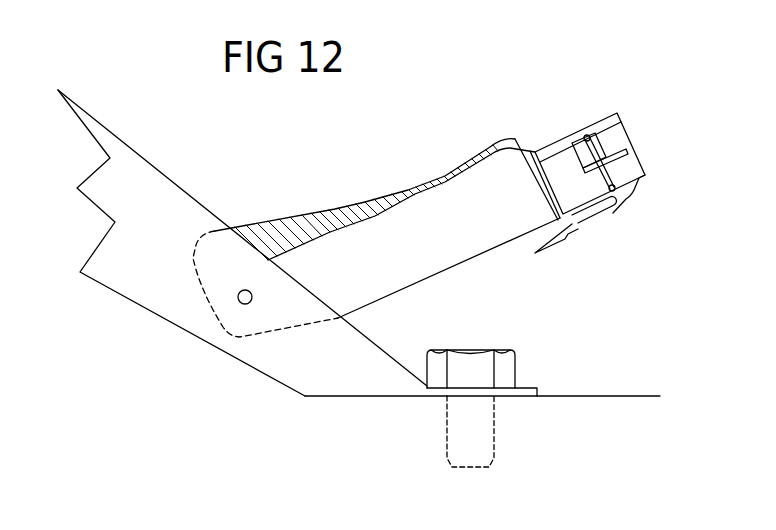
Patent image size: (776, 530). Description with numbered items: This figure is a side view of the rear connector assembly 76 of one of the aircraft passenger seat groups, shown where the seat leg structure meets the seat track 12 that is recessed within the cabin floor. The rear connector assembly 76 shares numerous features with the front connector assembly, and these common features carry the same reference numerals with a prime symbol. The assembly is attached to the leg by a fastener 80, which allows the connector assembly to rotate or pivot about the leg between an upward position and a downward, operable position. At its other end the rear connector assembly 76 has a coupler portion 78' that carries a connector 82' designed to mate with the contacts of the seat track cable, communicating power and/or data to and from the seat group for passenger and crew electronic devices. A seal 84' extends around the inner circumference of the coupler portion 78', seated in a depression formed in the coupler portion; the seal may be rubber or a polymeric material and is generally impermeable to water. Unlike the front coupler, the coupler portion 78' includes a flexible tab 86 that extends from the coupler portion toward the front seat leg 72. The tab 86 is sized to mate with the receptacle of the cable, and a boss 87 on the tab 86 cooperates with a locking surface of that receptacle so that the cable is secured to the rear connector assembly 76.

The seat track 12 is at (600, 396).
The front seat leg 72 is at (152, 198).
The rear connector assembly 76 is at (666, 134).
The coupler portion 78' is at (558, 149).
The fastener 80 is at (245, 304).
The connector 82' is at (662, 194).
The seal 84' is at (621, 137).
The tab 86 is at (560, 243).
The boss 87 is at (597, 223).